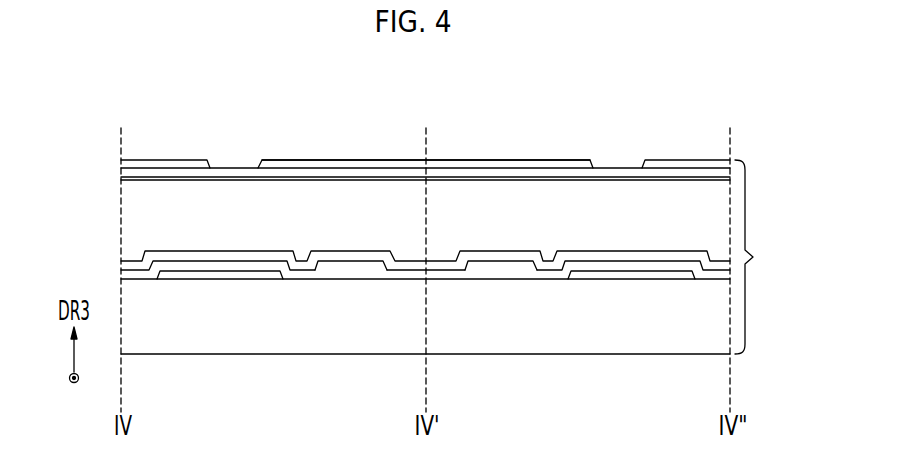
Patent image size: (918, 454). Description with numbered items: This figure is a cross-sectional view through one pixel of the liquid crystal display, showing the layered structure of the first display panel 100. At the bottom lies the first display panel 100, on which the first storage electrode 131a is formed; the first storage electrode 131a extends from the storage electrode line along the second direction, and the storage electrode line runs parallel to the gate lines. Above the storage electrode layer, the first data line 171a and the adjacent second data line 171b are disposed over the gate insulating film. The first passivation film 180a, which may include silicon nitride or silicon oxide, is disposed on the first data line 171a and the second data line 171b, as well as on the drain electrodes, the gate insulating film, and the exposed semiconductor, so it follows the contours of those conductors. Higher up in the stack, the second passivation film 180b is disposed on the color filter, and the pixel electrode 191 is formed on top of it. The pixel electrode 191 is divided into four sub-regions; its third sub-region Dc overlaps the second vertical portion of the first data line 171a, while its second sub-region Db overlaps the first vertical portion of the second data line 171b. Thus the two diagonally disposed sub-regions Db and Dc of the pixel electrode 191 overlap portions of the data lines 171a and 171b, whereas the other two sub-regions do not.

The first display panel 100 is at (678, 375).
The first storage electrode 131a is at (218, 275).
The first data line 171a is at (335, 265).
The second data line 171b is at (498, 265).
The first passivation film 180a is at (398, 262).
The second passivation film 180b is at (231, 175).
The pixel electrode 191 is at (167, 165).
The third sub-region Dc is at (348, 165).
The second sub-region Db is at (488, 165).